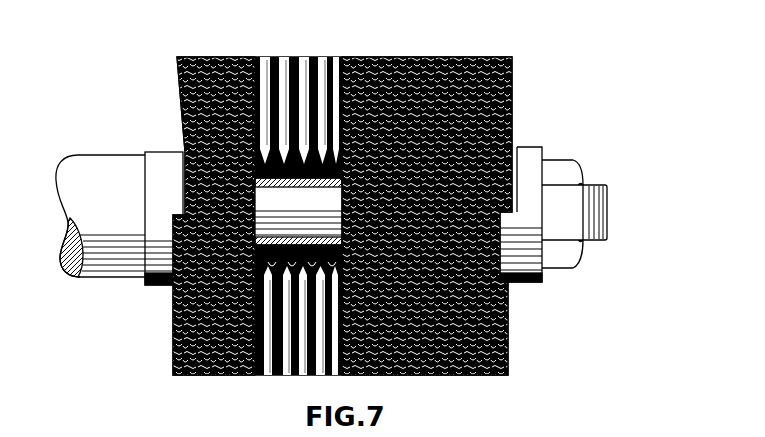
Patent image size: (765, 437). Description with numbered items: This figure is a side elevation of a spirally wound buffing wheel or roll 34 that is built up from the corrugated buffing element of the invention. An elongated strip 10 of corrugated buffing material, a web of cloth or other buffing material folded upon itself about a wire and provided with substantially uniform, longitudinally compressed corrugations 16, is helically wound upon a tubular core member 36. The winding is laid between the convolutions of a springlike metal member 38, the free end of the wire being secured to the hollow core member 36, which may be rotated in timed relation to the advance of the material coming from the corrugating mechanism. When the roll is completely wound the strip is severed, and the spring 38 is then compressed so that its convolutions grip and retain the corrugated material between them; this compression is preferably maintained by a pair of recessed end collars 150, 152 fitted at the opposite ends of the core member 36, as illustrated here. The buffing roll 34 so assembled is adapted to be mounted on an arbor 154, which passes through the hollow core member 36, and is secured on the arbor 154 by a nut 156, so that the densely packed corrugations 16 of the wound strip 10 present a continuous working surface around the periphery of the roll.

The strip of corrugated buffing material 10 is at (342, 195).
The corrugations 16 is at (233, 57).
The buffing wheel or roll 34 is at (387, 57).
The tubular core member 36 is at (262, 187).
The springlike metal member 38 is at (296, 236).
The recessed end collar 150 is at (163, 157).
The recessed end collar 152 is at (532, 148).
The arbor 154 is at (608, 211).
The nut 156 is at (574, 158).